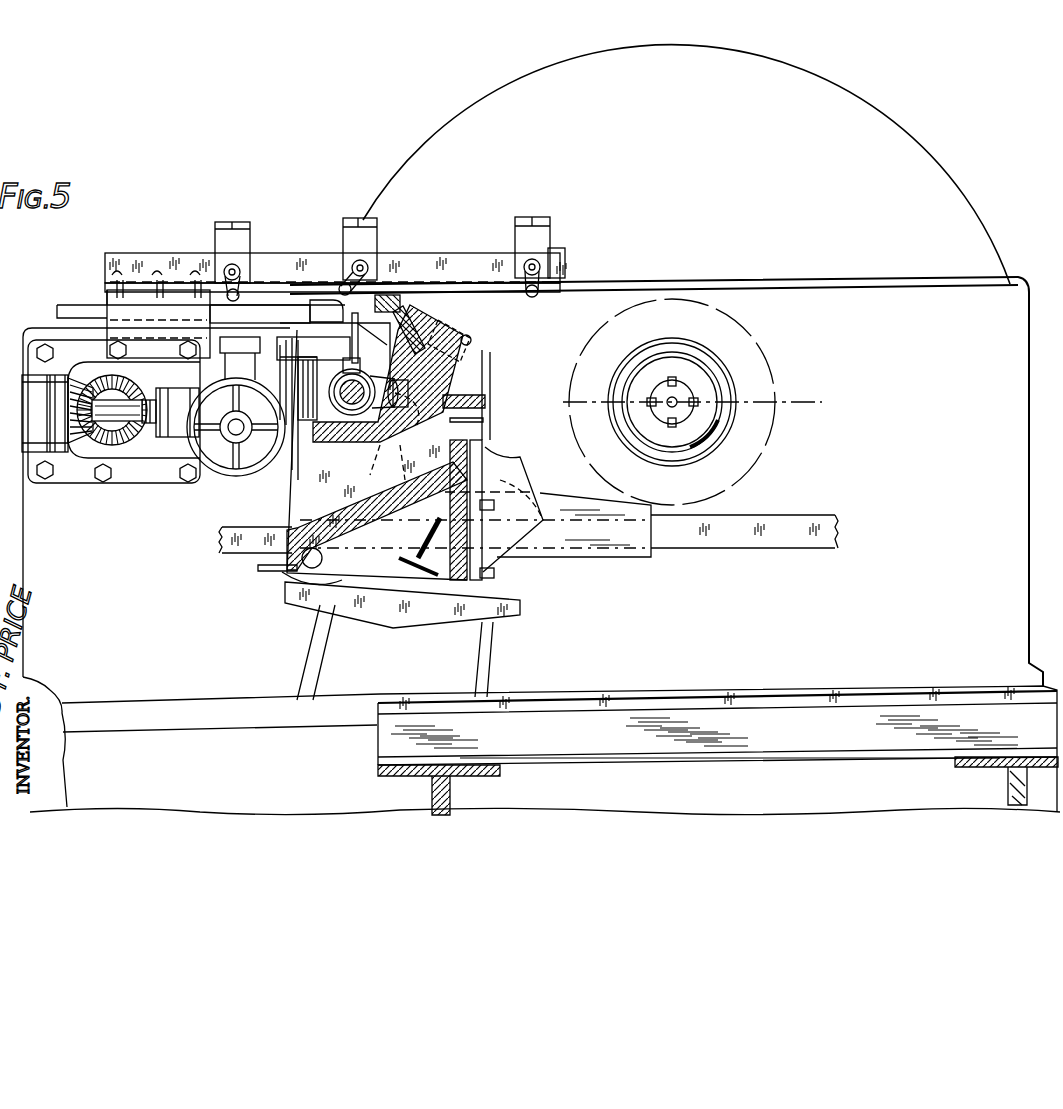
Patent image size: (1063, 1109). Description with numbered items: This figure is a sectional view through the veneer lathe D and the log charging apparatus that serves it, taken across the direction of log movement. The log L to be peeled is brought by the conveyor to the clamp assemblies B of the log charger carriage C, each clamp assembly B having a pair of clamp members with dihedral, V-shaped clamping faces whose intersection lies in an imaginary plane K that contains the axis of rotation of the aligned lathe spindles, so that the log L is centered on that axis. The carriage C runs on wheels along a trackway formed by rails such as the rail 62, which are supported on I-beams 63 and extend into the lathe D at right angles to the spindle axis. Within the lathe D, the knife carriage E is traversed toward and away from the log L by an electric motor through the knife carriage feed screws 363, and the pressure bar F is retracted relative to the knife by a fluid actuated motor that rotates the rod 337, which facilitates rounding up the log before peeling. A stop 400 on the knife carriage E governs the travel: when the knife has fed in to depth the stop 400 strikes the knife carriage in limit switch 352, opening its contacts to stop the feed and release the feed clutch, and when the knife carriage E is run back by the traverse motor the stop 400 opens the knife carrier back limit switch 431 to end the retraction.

The lathe D is at (405, 154).
The knife carrier back limit switch 431 is at (343, 237).
The stop 400 is at (388, 296).
The knife carriage in limit switch 352 is at (548, 238).
The rod 337 is at (330, 316).
The pressure bar F is at (468, 338).
The knife carriage feed screws 363 is at (136, 406).
The log L is at (771, 351).
The log charger carriage C is at (678, 396).
The imaginary plane K is at (812, 379).
The clamp assembly B is at (348, 452).
The knife carriage E is at (287, 498).
The rail 62 is at (672, 704).
The I-beam 63 is at (455, 801).